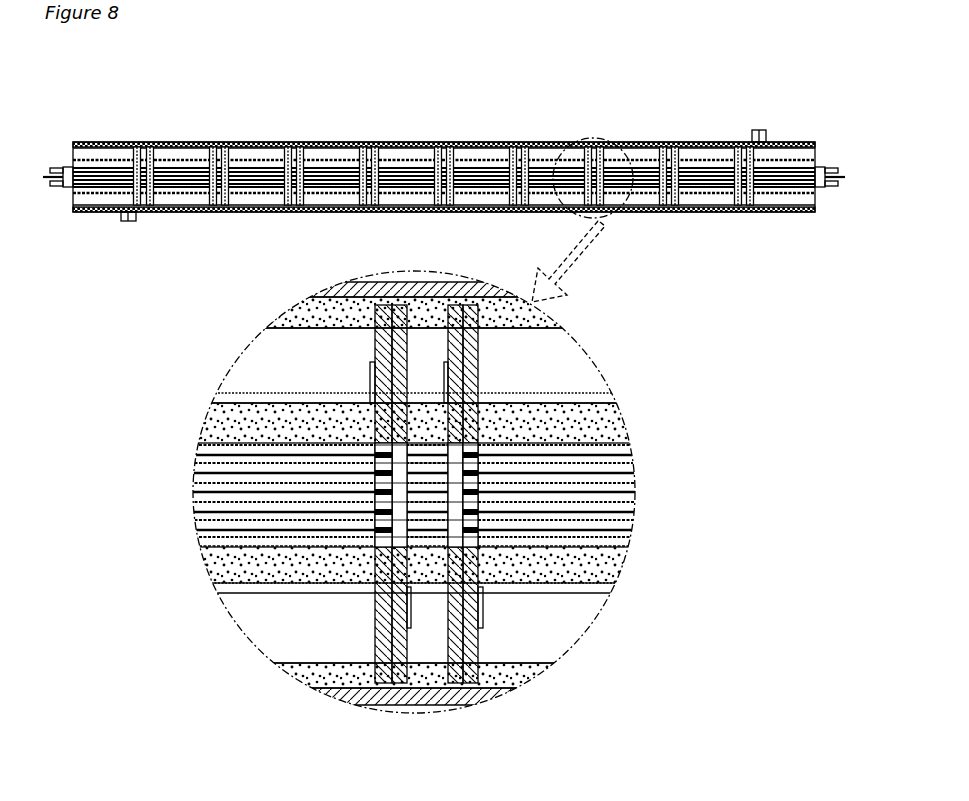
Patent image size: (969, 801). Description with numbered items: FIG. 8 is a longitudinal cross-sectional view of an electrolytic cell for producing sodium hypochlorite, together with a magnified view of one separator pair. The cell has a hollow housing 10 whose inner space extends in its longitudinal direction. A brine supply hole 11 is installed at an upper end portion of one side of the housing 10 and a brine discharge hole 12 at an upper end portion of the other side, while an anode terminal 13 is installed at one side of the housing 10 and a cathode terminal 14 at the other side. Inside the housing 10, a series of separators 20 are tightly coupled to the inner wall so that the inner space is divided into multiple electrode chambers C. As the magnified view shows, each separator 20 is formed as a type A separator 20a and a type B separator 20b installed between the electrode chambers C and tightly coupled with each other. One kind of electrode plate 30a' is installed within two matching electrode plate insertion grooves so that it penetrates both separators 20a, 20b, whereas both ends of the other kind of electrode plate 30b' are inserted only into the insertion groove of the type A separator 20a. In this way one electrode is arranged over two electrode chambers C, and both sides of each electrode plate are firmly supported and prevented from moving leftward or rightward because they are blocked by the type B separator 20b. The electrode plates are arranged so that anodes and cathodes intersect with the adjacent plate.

The housing 10 is at (266, 143).
The brine supply hole 11 is at (129, 222).
The brine discharge hole 12 is at (758, 130).
The anode terminal 13 is at (61, 167).
The cathode terminal 14 is at (826, 188).
The separator 20 is at (437, 140).
The type A separator 20a is at (377, 305).
The type B separator 20b is at (456, 300).
The electrode plate 30a' is at (455, 495).
The electrode plate 30b' is at (455, 496).
The electrode chamber C is at (266, 192).